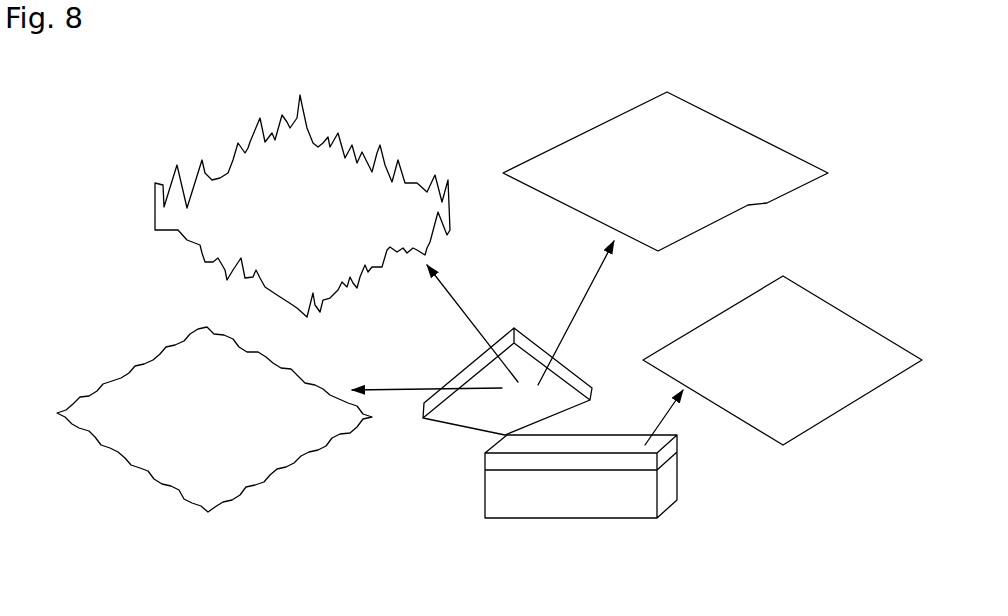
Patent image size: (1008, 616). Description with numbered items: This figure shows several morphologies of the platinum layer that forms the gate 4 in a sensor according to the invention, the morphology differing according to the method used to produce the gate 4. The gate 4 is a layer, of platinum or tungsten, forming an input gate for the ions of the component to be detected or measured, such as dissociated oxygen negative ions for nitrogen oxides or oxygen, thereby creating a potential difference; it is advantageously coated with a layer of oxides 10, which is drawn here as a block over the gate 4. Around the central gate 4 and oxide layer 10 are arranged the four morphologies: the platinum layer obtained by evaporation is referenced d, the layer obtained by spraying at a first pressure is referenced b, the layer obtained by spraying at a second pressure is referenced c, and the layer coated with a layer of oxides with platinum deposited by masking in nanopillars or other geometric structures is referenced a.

The gate morphology coated with a layer of oxides a is at (817, 358).
The gate morphology obtained by spraying at a first pressure b is at (698, 162).
The gate morphology obtained by spraying at a second pressure c is at (242, 197).
The gate morphology obtained by evaporation d is at (167, 412).
The layer forming an input gate 4 is at (505, 498).
The layer of oxides 10 is at (597, 472).